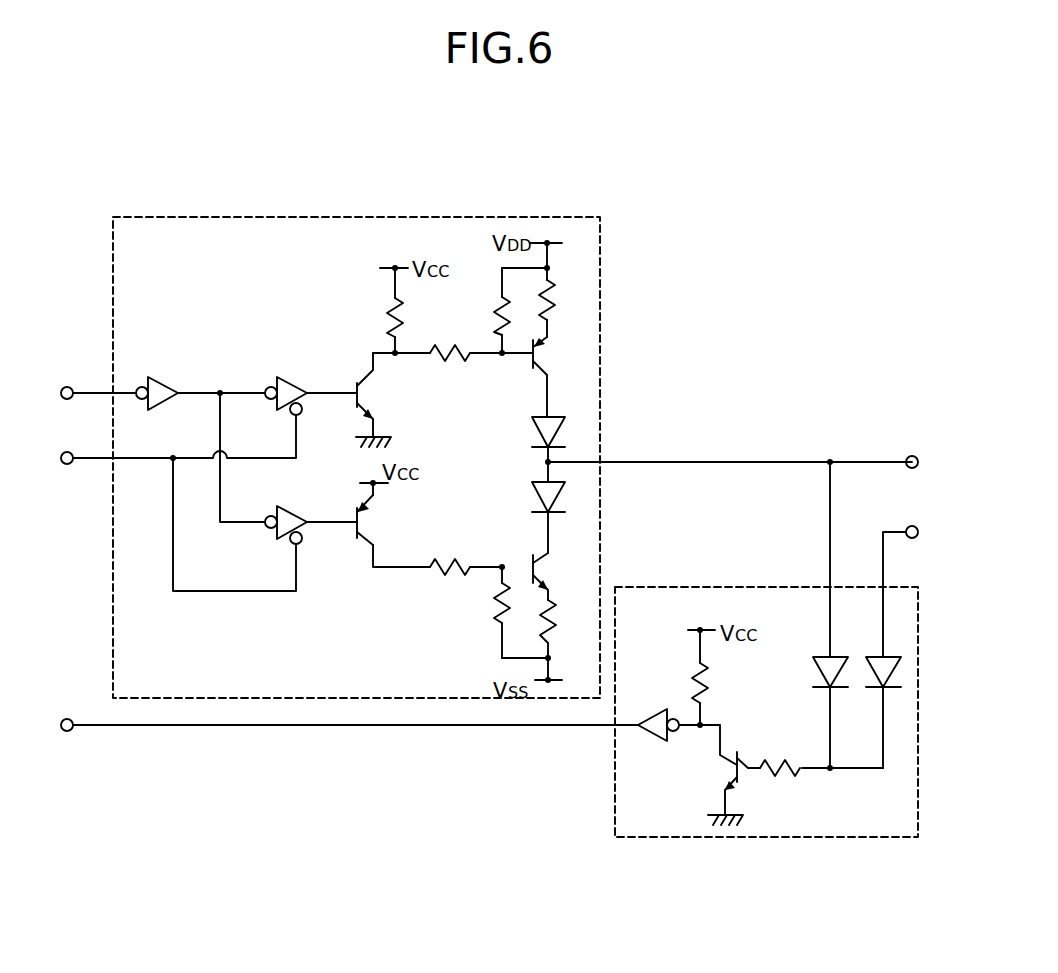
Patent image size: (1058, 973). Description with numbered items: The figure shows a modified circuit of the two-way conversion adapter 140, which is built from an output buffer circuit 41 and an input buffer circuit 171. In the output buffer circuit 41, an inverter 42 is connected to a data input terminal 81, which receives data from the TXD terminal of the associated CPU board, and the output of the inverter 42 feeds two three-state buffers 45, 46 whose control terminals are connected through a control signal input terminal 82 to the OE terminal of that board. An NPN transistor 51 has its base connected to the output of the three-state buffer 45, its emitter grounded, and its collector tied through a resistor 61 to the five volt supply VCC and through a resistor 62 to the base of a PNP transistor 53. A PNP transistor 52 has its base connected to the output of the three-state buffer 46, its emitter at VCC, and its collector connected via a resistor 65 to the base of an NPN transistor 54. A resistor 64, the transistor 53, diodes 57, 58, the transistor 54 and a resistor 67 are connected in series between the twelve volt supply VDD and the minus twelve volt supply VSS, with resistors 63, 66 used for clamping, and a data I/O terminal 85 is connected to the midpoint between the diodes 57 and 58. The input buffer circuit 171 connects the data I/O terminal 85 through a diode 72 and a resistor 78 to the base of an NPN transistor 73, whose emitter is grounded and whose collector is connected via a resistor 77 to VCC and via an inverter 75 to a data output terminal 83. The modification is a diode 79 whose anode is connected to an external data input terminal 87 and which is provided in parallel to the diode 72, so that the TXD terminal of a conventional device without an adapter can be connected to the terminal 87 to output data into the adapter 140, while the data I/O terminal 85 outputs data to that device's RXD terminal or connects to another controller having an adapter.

The output buffer circuit 41 is at (600, 233).
The inverter 42 is at (160, 377).
The three-state buffer 45 is at (284, 375).
The three-state buffer 46 is at (291, 505).
The NPN transistor 51 is at (357, 382).
The PNP transistor 52 is at (372, 509).
The PNP transistor 53 is at (546, 350).
The NPN transistor 54 is at (547, 568).
The diode 57 is at (535, 430).
The diode 58 is at (535, 497).
The resistor 61 is at (386, 320).
The resistor 62 is at (450, 372).
The resistor 63 is at (500, 318).
The resistor 64 is at (549, 292).
The resistor 65 is at (446, 584).
The resistor 66 is at (496, 612).
The resistor 67 is at (549, 620).
The diode 72 is at (828, 655).
The NPN transistor 73 is at (730, 769).
The inverter 75 is at (665, 710).
The resistor 77 is at (712, 691).
The resistor 78 is at (781, 760).
The diode 79 is at (880, 655).
The data input terminal 81 is at (67, 387).
The control signal input terminal 82 is at (67, 452).
The data output terminal 83 is at (67, 719).
The data I/O terminal 85 is at (912, 456).
The external data input terminal 87 is at (912, 526).
The adapter 140 is at (652, 404).
The input buffer circuit 171 is at (641, 574).